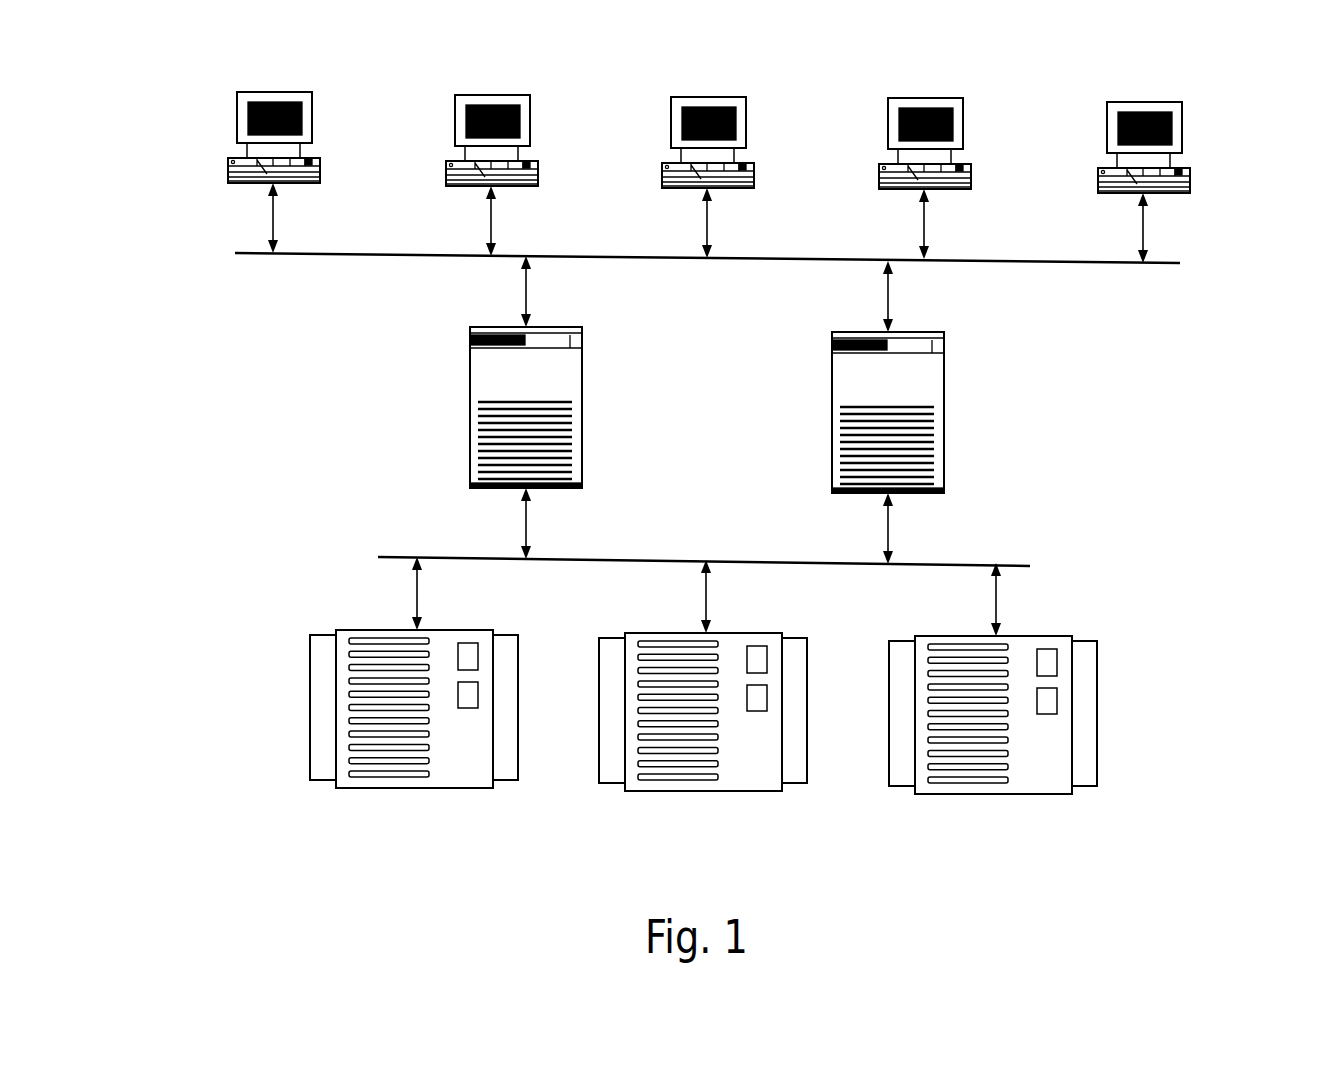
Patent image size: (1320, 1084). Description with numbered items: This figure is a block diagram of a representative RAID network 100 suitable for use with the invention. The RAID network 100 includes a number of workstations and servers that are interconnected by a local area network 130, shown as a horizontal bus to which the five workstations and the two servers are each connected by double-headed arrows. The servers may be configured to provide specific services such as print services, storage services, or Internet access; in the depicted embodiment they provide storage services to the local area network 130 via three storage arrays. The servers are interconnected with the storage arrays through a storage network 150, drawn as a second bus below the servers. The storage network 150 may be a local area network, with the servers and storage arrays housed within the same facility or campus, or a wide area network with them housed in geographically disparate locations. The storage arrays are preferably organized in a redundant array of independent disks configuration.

The RAID network 100 is at (202, 107).
The local area network 130 is at (598, 256).
The storage network 150 is at (629, 560).